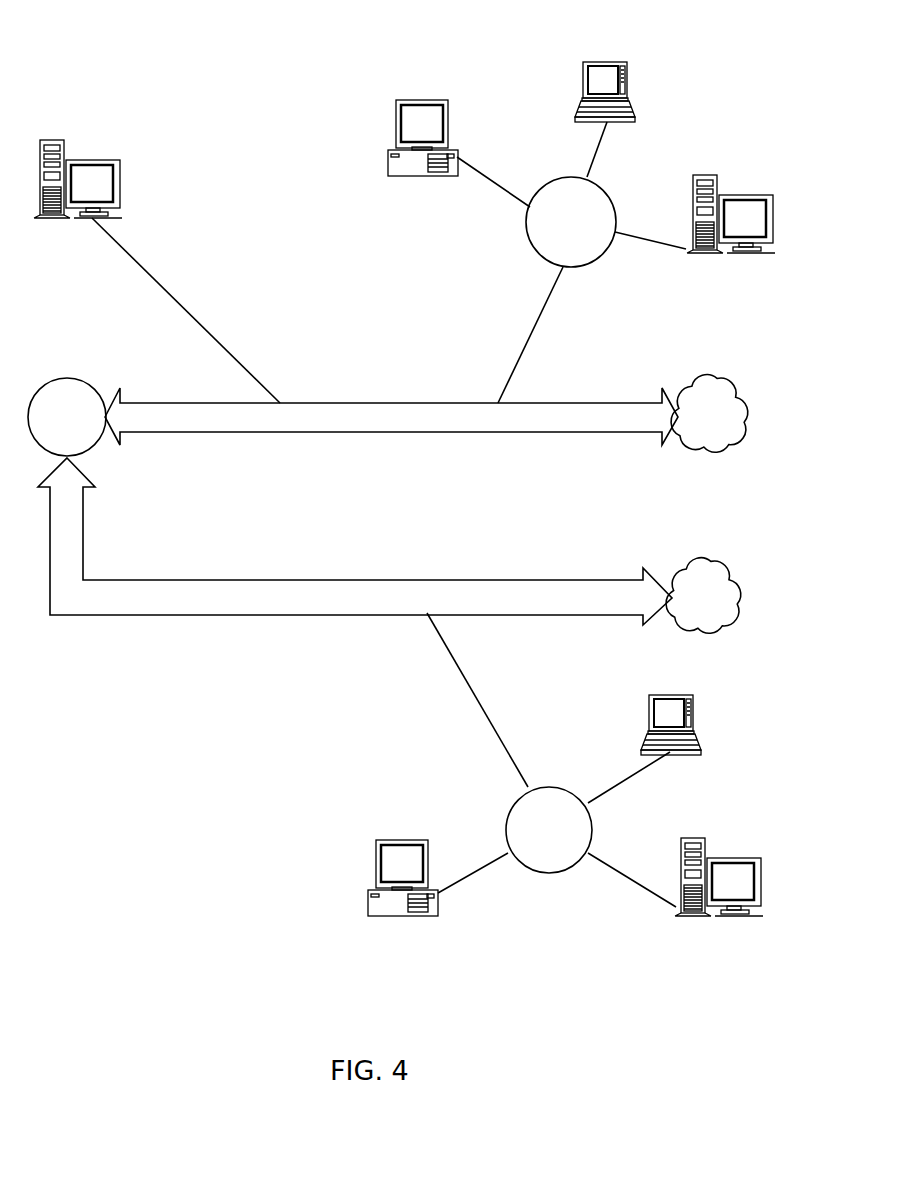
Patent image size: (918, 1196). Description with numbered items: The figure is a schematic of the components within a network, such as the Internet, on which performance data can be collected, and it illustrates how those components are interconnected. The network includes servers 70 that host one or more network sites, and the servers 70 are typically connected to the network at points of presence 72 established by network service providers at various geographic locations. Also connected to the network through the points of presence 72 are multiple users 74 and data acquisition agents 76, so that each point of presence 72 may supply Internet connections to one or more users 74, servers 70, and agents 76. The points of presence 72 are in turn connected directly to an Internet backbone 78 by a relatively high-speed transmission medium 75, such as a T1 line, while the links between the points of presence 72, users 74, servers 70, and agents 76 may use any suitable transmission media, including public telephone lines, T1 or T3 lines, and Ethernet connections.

The server 70 is at (108, 165).
The point of presence 72 is at (598, 203).
The user 74 is at (612, 63).
The high-speed transmission medium 75 is at (530, 338).
The data acquisition agent 76 is at (438, 107).
The Internet backbone 78 is at (365, 432).